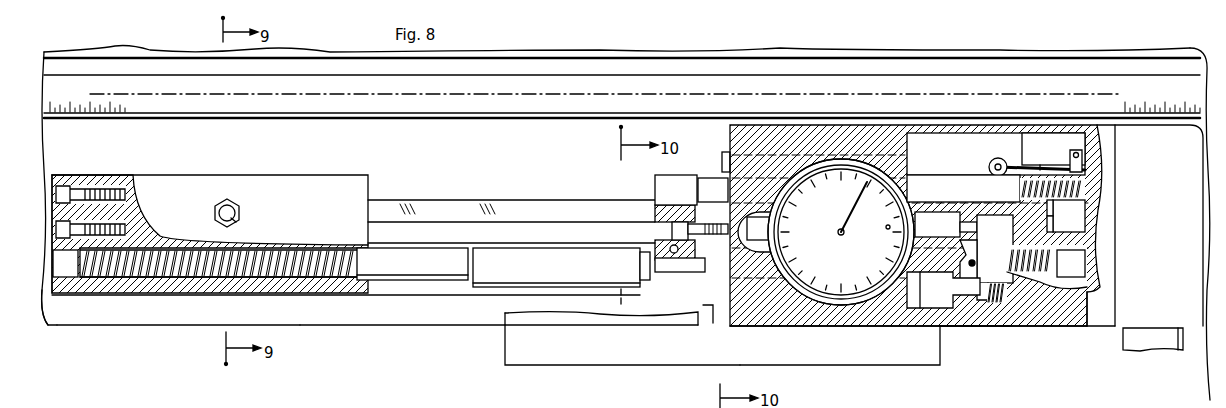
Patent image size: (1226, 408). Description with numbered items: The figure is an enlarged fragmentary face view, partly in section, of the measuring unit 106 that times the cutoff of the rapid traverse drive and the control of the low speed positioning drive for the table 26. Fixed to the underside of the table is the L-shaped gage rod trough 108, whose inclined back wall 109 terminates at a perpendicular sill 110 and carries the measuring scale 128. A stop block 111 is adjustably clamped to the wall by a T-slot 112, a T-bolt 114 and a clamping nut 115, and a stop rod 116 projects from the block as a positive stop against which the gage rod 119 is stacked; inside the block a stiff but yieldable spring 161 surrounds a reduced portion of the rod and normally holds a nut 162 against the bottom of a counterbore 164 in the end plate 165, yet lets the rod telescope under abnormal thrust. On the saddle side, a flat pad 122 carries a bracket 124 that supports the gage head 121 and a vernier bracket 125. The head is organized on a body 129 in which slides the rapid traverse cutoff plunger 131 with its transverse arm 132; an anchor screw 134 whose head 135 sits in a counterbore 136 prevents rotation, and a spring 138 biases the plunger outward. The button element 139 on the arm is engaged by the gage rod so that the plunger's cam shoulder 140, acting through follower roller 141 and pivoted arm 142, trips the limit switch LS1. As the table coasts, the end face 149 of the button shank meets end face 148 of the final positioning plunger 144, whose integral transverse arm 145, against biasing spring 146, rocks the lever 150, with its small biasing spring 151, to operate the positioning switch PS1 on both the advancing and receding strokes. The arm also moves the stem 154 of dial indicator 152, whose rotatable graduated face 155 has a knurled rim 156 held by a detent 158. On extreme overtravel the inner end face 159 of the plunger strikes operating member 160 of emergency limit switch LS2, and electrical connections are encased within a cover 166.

The table 26 is at (143, 48).
The measuring unit 106 is at (1035, 322).
The gage rod trough 108 is at (352, 327).
The back wall 109 is at (518, 129).
The sill 110 is at (138, 326).
The stop block 111 is at (326, 178).
The T-slot 112 is at (487, 201).
The T-bolt 114 is at (233, 218).
The clamping nut 115 is at (240, 209).
The stop rod 116 is at (447, 281).
The gage rod 119 is at (566, 254).
The gage head 121 is at (957, 318).
The pad 122 is at (643, 366).
The bracket 124 is at (737, 365).
The vernier bracket 125 is at (512, 325).
The measuring scale 128 is at (125, 108).
The body 129 is at (793, 320).
The rapid traverse cutoff plunger 131 is at (710, 178).
The transverse arm 132 is at (656, 178).
The anchor screw 134 is at (708, 220).
The head 135 is at (672, 232).
The counterbore 136 is at (656, 212).
The spring 138 is at (1080, 188).
The button element 139 is at (646, 281).
The cam shoulder 140 is at (990, 166).
The follower roller 141 is at (995, 160).
The pivoted arm 142 is at (1052, 165).
The final positioning plunger 144 is at (741, 283).
The transverse arm 145 is at (1010, 240).
The biasing spring 146 is at (1054, 258).
The end face 148 is at (727, 262).
The end face 149 is at (705, 265).
The rockable lever 150 is at (1013, 249).
The biasing spring 151 is at (1000, 304).
The dial indicator 152 is at (909, 175).
The stem 154 is at (966, 222).
The graduated face 155 is at (912, 188).
The peripheral rim 156 is at (836, 308).
The detent 158 is at (732, 136).
The inner end face 159 is at (1036, 209).
The operating member 160 is at (1053, 226).
The spring 161 is at (180, 282).
The nut 162 is at (64, 290).
The counterbore 164 is at (52, 326).
The end plate 165 is at (75, 181).
The cover 166 is at (1200, 327).
The limit switch LS1 is at (1078, 143).
The emergency limit switch LS2 is at (1083, 221).
The positioning switch PS1 is at (930, 306).